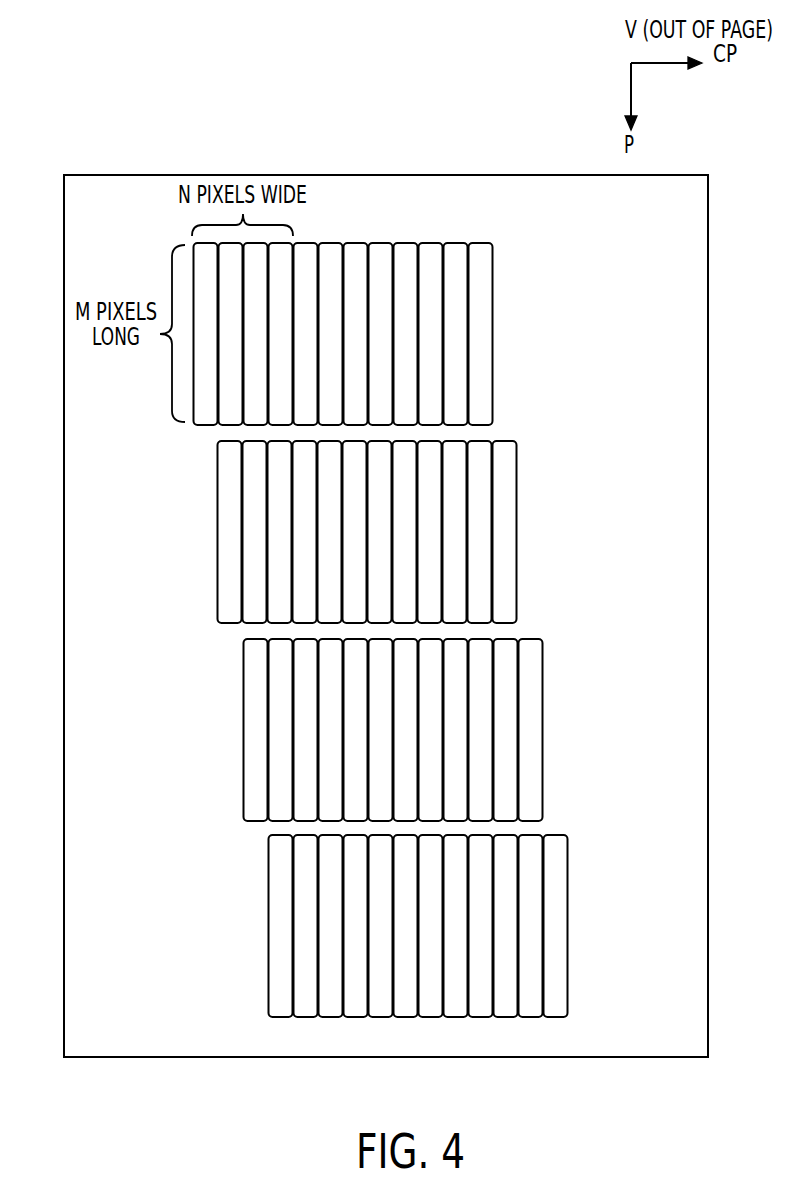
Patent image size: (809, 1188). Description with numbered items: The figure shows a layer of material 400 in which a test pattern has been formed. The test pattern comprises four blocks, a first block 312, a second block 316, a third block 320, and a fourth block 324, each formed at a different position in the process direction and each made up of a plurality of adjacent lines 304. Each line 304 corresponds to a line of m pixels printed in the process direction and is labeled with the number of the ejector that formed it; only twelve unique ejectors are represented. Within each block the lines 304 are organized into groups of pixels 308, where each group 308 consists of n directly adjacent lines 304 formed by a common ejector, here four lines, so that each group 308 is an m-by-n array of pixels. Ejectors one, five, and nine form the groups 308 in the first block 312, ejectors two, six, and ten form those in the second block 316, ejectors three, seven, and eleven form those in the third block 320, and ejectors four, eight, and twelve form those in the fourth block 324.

The layer of material 400 is at (70, 102).
The line 304 is at (360, 252).
The group of pixels 308 is at (495, 240).
The first block 312 is at (379, 304).
The second block 316 is at (518, 492).
The third block 320 is at (545, 687).
The fourth block 324 is at (570, 880).